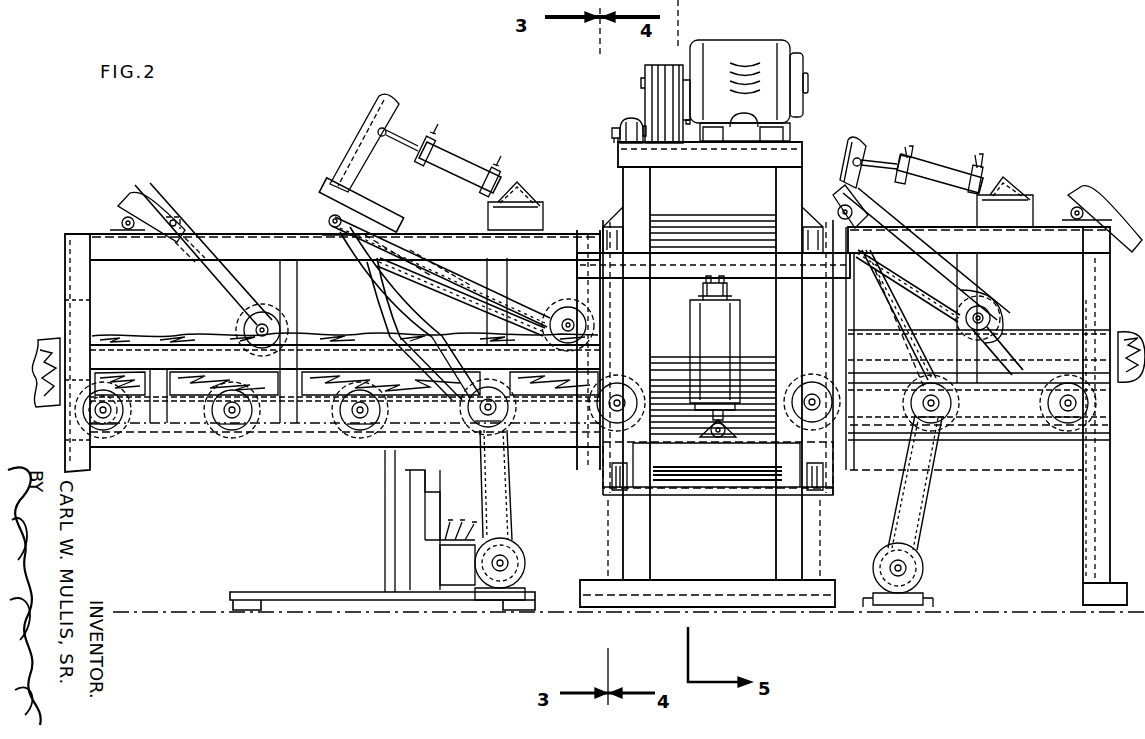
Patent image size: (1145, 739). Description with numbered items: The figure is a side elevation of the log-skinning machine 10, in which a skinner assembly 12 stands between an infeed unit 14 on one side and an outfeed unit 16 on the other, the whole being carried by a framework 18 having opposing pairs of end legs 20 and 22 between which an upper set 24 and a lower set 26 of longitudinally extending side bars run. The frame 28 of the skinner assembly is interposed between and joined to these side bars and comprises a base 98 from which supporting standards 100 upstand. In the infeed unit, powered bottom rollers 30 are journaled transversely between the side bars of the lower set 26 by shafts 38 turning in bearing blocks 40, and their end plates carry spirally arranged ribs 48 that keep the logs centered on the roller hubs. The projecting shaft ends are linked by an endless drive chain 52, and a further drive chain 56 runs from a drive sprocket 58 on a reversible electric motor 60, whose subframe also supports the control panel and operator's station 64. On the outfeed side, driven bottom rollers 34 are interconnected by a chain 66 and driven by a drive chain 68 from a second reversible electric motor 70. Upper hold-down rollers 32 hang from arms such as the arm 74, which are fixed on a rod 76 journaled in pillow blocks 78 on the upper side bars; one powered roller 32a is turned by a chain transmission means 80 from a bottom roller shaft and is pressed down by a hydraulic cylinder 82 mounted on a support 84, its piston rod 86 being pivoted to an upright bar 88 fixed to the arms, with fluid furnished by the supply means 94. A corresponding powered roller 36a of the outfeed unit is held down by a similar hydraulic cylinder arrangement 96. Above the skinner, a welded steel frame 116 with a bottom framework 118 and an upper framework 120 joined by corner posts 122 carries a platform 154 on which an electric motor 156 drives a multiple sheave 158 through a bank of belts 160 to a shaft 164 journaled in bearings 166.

The log-skinning machine 10 is at (1062, 495).
The skinner assembly 12 is at (822, 160).
The infeed unit 14 is at (270, 450).
The outfeed unit 16 is at (1065, 320).
The framework 18 is at (1096, 495).
The end legs 20 is at (62, 293).
The end legs 22 is at (1100, 530).
The upper set of side bars 24 is at (240, 232).
The lower set of side bars 26 is at (295, 450).
The frame 28 is at (612, 540).
The bottom rollers 30 is at (118, 423).
The hold-down rollers 32 is at (250, 324).
The powered hold-down roller 32a is at (548, 325).
The bottom rollers 34 is at (1003, 368).
The powered hold-down roller 36a is at (998, 308).
The shafts 38 is at (232, 425).
The bearing blocks 40 is at (106, 425).
The spirally arranged ribs 48 is at (357, 430).
The endless drive chain 52 is at (510, 425).
The drive chain 56 is at (512, 520).
The drive sprocket 58 is at (515, 546).
The reversible electric motor 60 is at (525, 572).
The control panel and operator's station 64 is at (385, 535).
The chain 66 is at (940, 452).
The drive chain 68 is at (915, 530).
The reversible electric motor 70 is at (922, 565).
The arm 74 is at (212, 278).
The rod 76 is at (134, 214).
The pillow blocks 78 is at (165, 224).
The chain transmission means 80 is at (392, 286).
The hydraulic cylinder 82 is at (458, 162).
The support 84 is at (540, 214).
The piston rod 86 is at (398, 138).
The upright bar 88 is at (378, 145).
The supply means 94 is at (447, 540).
The hydraulic cylinder arrangement 96 is at (928, 170).
The base 98 is at (700, 582).
The supporting standards 100 is at (612, 567).
The welded steel frame 116 is at (720, 480).
The bottom framework 118 is at (775, 482).
The upper framework 120 is at (702, 166).
The corner posts 122 is at (680, 208).
The platform 154 is at (790, 140).
The electric motor 156 is at (790, 55).
The multiple sheave 158 is at (643, 70).
The bank of belts 160 is at (644, 110).
The shaft 164 is at (618, 131).
The bearings 166 is at (616, 136).